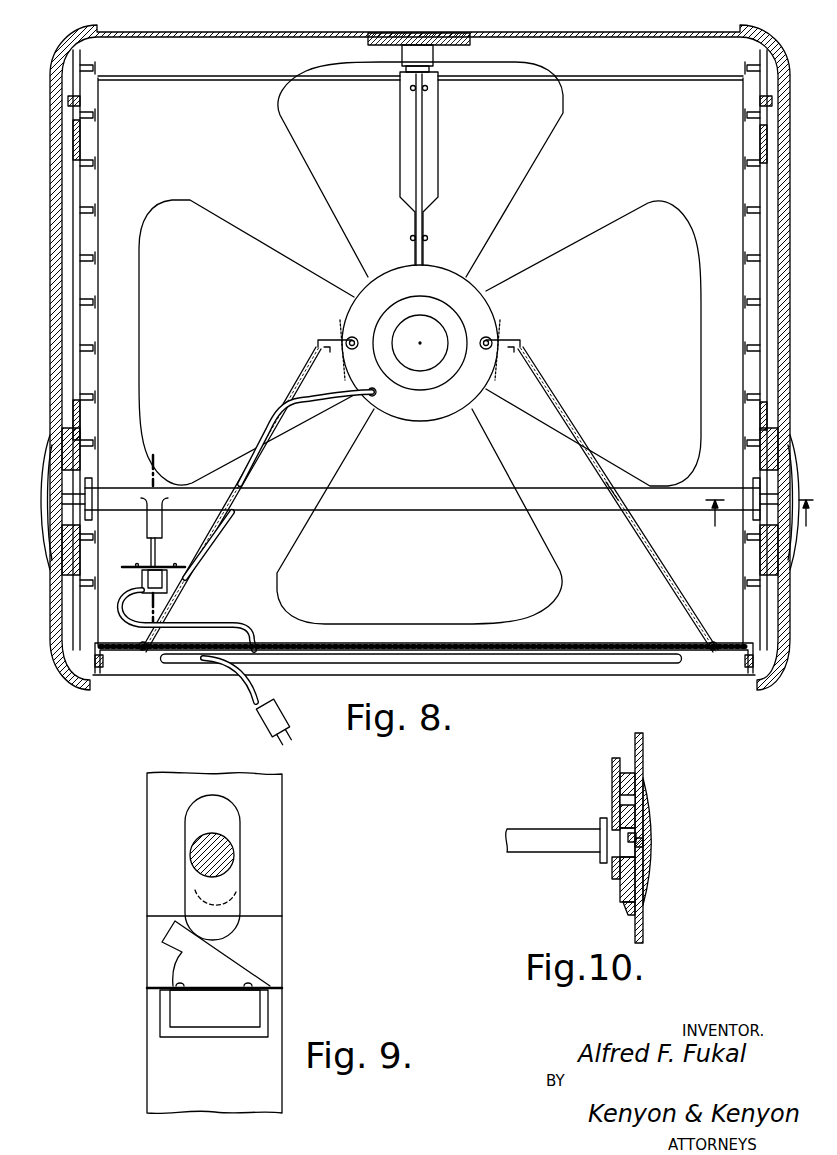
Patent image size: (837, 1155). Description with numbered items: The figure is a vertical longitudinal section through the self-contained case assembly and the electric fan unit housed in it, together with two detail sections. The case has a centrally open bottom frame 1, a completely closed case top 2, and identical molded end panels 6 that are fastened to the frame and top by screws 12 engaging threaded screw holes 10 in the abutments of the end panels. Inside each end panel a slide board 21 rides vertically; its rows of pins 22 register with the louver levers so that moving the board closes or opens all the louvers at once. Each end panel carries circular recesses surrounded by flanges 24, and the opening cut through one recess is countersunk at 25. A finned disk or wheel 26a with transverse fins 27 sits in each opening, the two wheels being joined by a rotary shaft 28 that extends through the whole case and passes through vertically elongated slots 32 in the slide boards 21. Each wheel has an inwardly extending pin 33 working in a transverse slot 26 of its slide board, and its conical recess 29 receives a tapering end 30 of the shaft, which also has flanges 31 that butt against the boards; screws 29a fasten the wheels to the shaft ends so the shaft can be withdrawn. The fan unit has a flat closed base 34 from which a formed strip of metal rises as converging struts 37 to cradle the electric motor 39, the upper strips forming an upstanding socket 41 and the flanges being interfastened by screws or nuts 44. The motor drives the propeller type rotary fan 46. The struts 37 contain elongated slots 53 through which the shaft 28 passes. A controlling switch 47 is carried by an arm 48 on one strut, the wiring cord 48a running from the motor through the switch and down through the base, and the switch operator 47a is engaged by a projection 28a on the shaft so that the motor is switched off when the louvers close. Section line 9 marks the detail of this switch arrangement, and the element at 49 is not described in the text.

In FIG. 8, the bottom frame 1 is at (618, 646).
In FIG. 8, the case top 2 is at (284, 36).
In FIG. 8, the end panels 6 is at (50, 262).
In FIG. 8, the section line 9- 9 is at (150, 462).
In FIG. 8, the threaded screw holes 10 is at (761, 525).
In FIG. 8, the screws 12 is at (80, 101).
In FIG. 8, the slide boards 21 is at (80, 192).
In FIG. 8, the pins 22 is at (92, 258).
In FIG. 8, the flanges 24 is at (776, 424).
In FIG. 8, the countersink 25 is at (56, 452).
In FIG. 10, the transverse slots 26 is at (616, 816).
In FIG. 10, the finned disks or wheels 26a is at (650, 826).
In FIG. 10, the transverse fins 27 is at (646, 801).
In FIG. 8, the rotary shaft 28 is at (572, 506).
In FIG. 9, the rotary shaft 28 is at (218, 851).
In FIG. 10, the rotary shaft 28 is at (522, 845).
In FIG. 8, the projection 28a is at (148, 528).
In FIG. 9, the projection 28a is at (232, 912).
In FIG. 10, the conical recesses 29 is at (640, 848).
In FIG. 10, the screws 29a is at (645, 840).
In FIG. 10, the tapering ends 30 is at (650, 870).
In FIG. 10, the flanges 31 is at (603, 865).
In FIG. 8, the slots 32 is at (86, 456).
In FIG. 10, the pin 33 is at (626, 800).
In FIG. 8, the flat base 34 is at (575, 664).
In FIG. 8, the converging struts 37 is at (214, 528).
In FIG. 9, the converging struts 37 is at (270, 788).
In FIG. 8, the electric motor 39 is at (478, 318).
In FIG. 8, the upstanding socket 41 is at (430, 170).
In FIG. 8, the screws or nuts 44 is at (522, 350).
In FIG. 8, the propeller type rotary fan 46 is at (608, 224).
In FIG. 8, the controlling switch 47 is at (167, 580).
In FIG. 9, the controlling switch 47 is at (212, 1010).
In FIG. 8, the switch operator 47a is at (150, 556).
In FIG. 9, the switch operator 47a is at (222, 968).
In FIG. 8, the arm 48 is at (187, 581).
In FIG. 9, the arm 48 is at (270, 930).
In FIG. 8, the wiring cord 48a is at (268, 452).
In FIG. 8, the mounting block 49 is at (430, 52).
In FIG. 8, the longitudinally elongated slots 53 is at (606, 488).